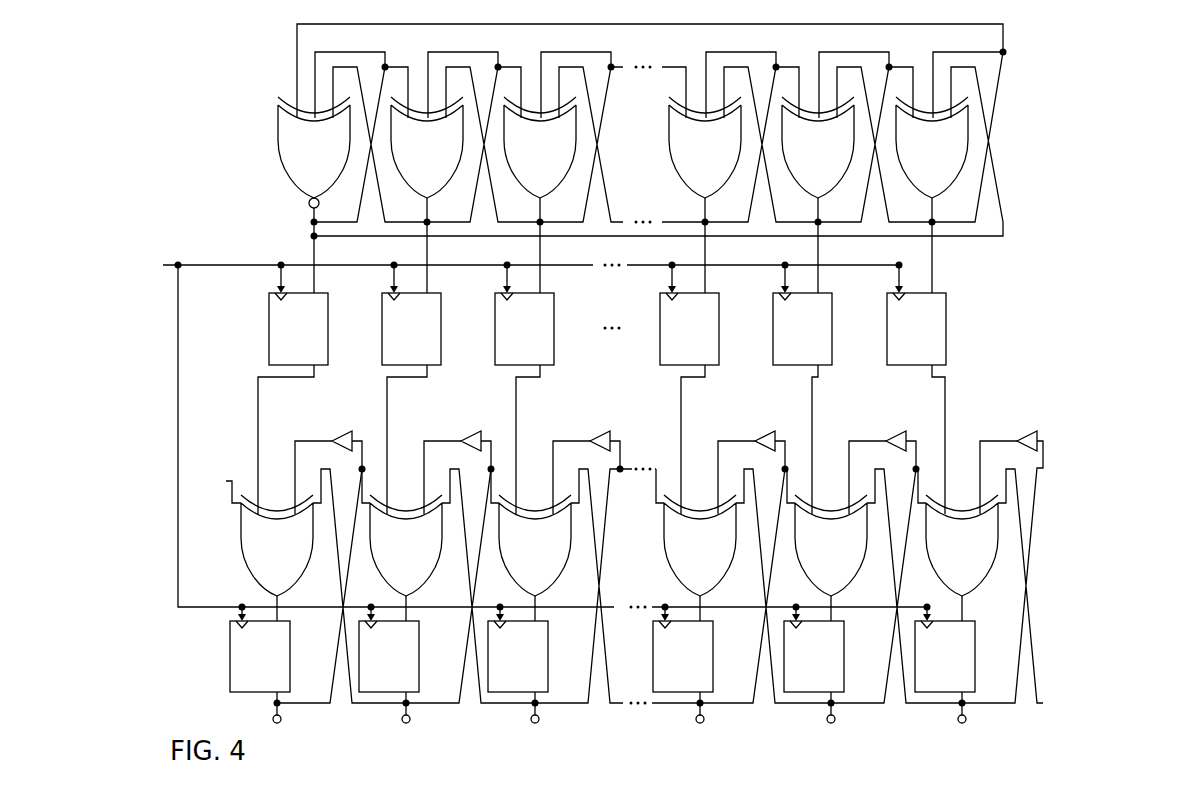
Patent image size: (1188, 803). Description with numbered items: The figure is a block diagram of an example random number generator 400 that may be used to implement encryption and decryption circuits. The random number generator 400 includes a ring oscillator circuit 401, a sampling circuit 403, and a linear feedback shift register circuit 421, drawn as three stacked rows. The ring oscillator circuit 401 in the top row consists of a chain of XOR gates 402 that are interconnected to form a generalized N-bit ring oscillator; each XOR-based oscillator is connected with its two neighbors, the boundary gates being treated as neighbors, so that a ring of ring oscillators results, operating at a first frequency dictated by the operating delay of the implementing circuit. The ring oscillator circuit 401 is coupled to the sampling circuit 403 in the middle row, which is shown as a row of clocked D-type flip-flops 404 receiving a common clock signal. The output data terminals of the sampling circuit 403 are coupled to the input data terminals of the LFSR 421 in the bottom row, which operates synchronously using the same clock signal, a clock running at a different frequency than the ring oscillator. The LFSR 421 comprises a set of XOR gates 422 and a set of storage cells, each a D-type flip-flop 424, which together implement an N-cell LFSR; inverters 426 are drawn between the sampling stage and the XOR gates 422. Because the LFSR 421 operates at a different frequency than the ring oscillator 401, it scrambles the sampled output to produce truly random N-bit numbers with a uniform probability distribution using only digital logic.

The random number generator 400 is at (176, 106).
The ring oscillator circuit 401 is at (1028, 23).
The XOR gates 402 is at (623, 152).
The sampling circuit 403 is at (1002, 287).
The first-stage D flip-flop 404 is at (964, 318).
The linear feedback shift register circuit 421 is at (1082, 463).
The XOR gates 422 is at (619, 558).
The flip-flops 424 is at (1000, 722).
The inverter 426 is at (1023, 434).